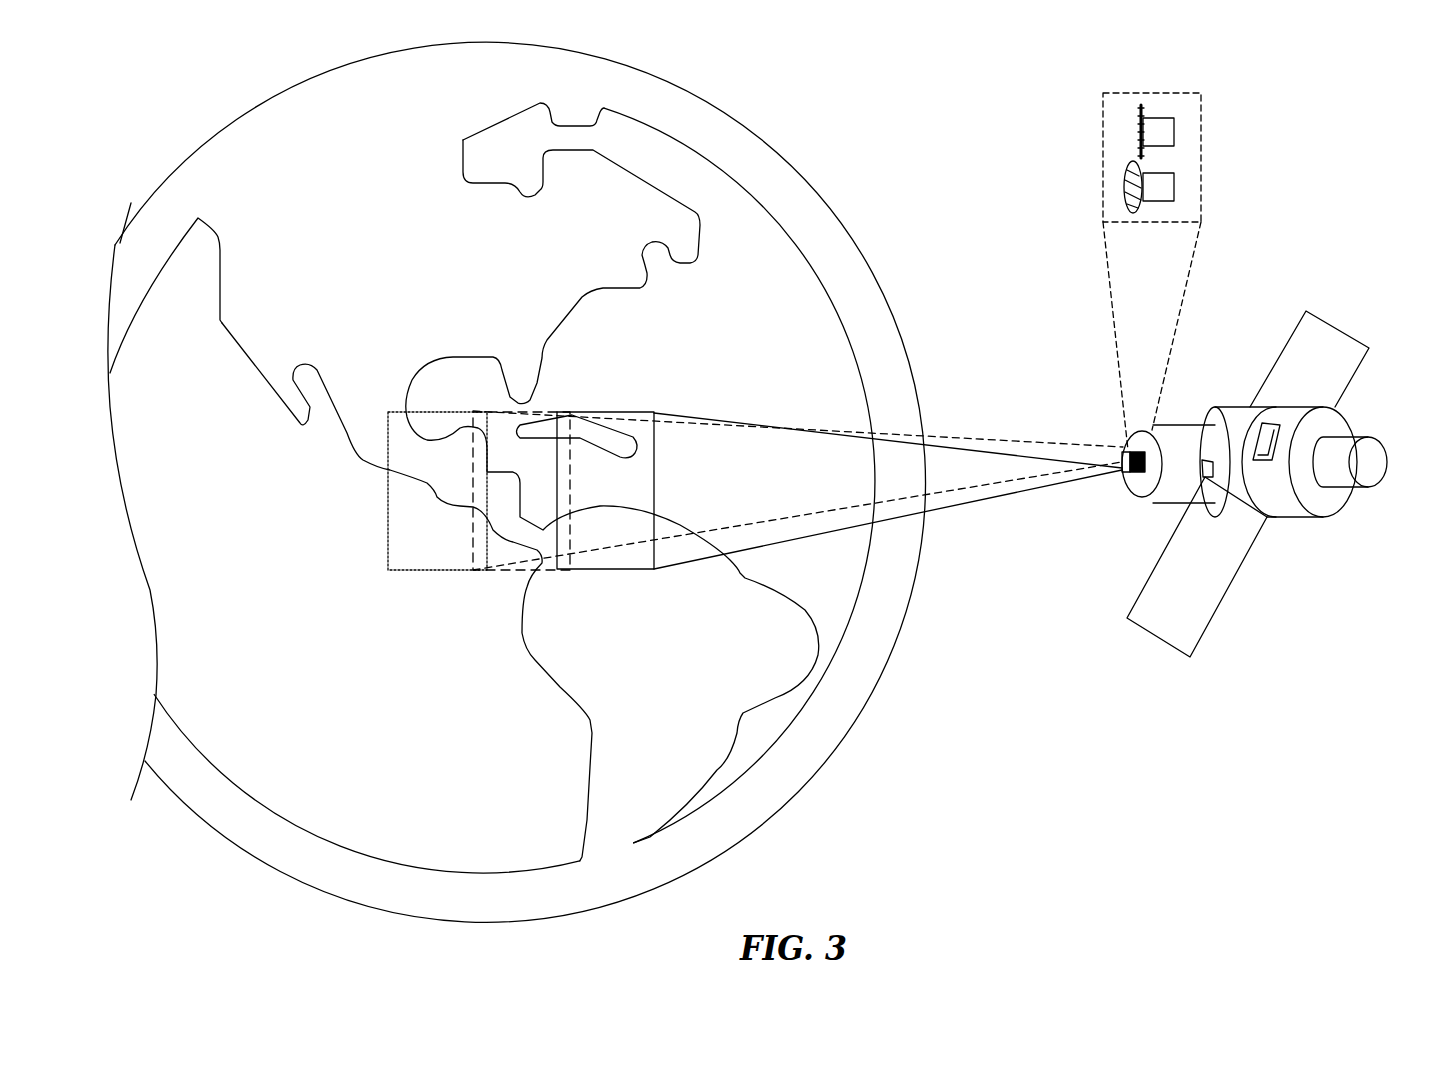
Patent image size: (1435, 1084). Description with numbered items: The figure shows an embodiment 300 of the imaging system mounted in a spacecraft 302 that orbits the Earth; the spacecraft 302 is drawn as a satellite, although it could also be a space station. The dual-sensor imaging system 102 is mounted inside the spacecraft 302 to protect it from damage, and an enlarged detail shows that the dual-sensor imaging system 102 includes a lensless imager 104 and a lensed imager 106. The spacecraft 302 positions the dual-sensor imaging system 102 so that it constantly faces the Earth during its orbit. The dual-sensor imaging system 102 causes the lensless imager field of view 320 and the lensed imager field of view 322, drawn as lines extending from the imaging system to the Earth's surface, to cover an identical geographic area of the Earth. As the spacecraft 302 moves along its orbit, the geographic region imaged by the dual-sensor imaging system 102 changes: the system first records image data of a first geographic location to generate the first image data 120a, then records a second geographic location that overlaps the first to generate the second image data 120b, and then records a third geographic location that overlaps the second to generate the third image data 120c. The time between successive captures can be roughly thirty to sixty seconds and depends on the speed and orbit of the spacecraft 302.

The embodiment of the system 300 is at (767, 482).
The spacecraft 302 is at (1375, 432).
The dual-sensor imaging system 102 is at (1130, 487).
The lensless imager 104 is at (1168, 118).
The lensed imager 106 is at (1173, 173).
The first image data 120a is at (432, 412).
The second image data 120b is at (533, 410).
The third image data 120c is at (623, 410).
The lensless imager field of view 320 is at (1040, 487).
The lensed imager field of view 322 is at (998, 442).